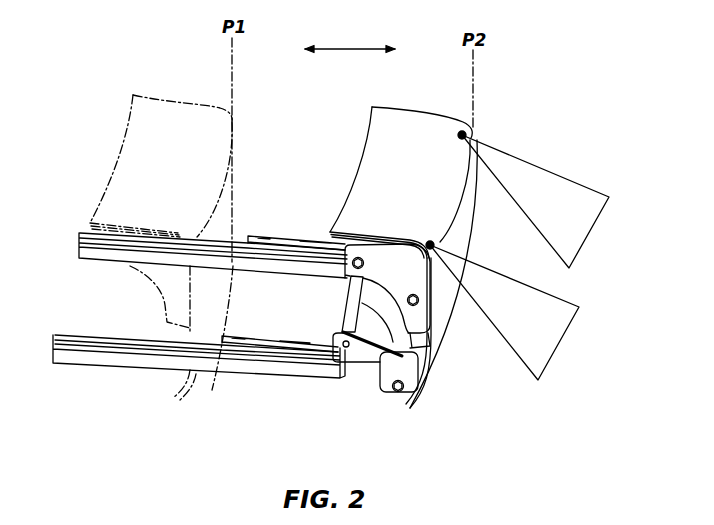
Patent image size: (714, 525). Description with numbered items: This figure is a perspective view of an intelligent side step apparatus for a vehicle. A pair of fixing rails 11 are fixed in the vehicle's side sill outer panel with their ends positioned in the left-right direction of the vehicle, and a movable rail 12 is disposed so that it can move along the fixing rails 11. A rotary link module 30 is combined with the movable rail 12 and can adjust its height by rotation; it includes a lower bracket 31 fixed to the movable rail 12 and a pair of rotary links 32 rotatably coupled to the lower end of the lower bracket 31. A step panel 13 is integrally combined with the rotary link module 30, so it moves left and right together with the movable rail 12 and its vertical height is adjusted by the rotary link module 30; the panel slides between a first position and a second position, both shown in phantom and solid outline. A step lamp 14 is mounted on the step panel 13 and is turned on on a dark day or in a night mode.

The fixing rail 11 is at (80, 253).
The movable rail 12 is at (270, 233).
The step panel 13 is at (123, 162).
The step lamp 14 is at (472, 120).
The rotary link module 30 is at (357, 380).
The lower bracket 31 is at (388, 394).
The rotary link 32 is at (350, 312).